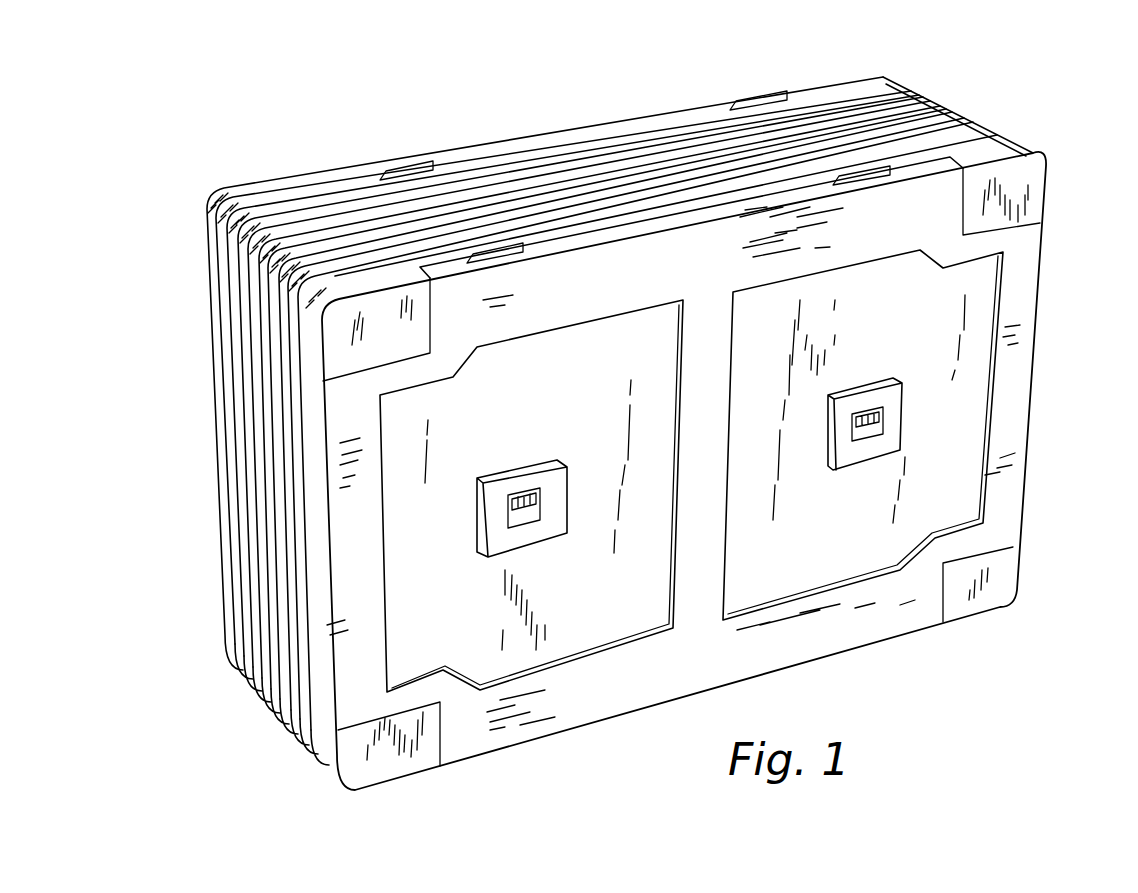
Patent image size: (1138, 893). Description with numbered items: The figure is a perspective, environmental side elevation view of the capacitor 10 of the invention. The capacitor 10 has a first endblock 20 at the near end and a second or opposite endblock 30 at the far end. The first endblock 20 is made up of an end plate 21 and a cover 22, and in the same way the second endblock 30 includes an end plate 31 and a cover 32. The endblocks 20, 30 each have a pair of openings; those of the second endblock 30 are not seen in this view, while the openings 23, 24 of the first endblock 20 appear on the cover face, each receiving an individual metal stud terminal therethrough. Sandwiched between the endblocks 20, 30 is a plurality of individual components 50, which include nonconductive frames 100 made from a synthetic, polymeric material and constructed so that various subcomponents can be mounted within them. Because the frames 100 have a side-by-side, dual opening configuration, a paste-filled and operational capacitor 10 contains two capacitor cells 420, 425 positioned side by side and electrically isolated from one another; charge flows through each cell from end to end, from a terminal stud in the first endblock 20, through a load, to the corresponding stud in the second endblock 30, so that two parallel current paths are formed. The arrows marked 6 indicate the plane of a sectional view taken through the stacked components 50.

The capacitor 10 is at (713, 70).
The first endblock 20 is at (1037, 137).
The end plate 21 is at (308, 336).
The cover 22 is at (1025, 291).
The opening 23 is at (893, 417).
The opening 24 is at (510, 510).
The second endblock 30 is at (903, 60).
The end plate 31 is at (219, 230).
The cover 32 is at (503, 147).
The individual components 50 is at (968, 118).
The nonconductive frame 100 is at (300, 220).
The capacitor cell 420 is at (582, 640).
The capacitor cell 425 is at (845, 560).
The section line 6- 6 is at (325, 114).